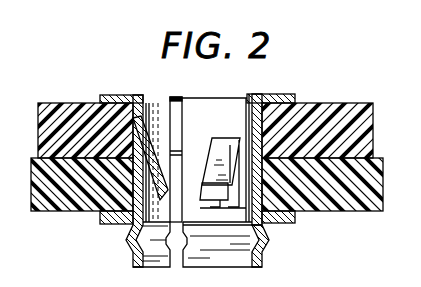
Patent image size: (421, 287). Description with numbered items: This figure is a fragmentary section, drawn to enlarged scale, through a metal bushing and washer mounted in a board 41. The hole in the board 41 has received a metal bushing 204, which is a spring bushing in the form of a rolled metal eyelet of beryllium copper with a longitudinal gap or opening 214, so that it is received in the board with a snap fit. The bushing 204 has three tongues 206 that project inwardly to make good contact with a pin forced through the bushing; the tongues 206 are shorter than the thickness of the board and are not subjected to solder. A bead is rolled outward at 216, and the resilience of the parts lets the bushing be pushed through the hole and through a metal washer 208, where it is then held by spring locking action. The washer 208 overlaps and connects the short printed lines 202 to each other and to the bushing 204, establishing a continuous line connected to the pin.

The board 41 is at (380, 170).
The short printed lines 202 is at (68, 213).
The metal bushing 204 is at (246, 97).
The tongues 206 is at (150, 158).
The metal washer 208 is at (122, 226).
The longitudinal gap 214 is at (191, 78).
The bead 216 is at (260, 238).